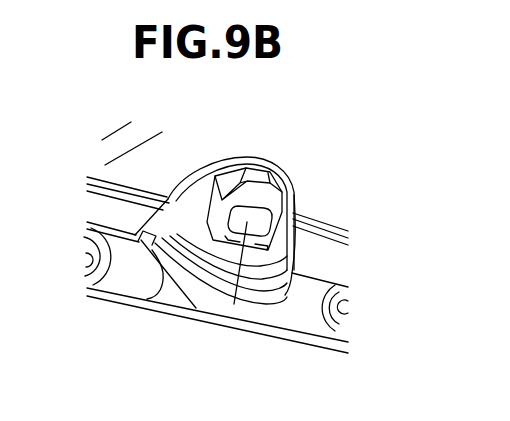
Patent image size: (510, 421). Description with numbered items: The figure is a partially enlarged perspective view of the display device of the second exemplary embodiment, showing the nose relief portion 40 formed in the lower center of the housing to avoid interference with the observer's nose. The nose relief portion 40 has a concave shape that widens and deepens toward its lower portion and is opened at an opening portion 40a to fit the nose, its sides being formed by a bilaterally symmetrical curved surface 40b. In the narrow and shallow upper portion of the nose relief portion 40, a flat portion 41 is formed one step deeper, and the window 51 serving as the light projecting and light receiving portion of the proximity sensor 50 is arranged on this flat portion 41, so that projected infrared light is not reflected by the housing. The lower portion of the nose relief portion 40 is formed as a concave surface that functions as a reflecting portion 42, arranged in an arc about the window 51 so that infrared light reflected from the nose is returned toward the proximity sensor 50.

The nose relief portion 40 is at (228, 162).
The opening portion 40a is at (160, 277).
The curved surface 40b is at (185, 196).
The flat portion 41 is at (261, 193).
The reflecting portion 42 is at (252, 240).
The proximity sensor 50 is at (194, 305).
The window 51 is at (227, 232).